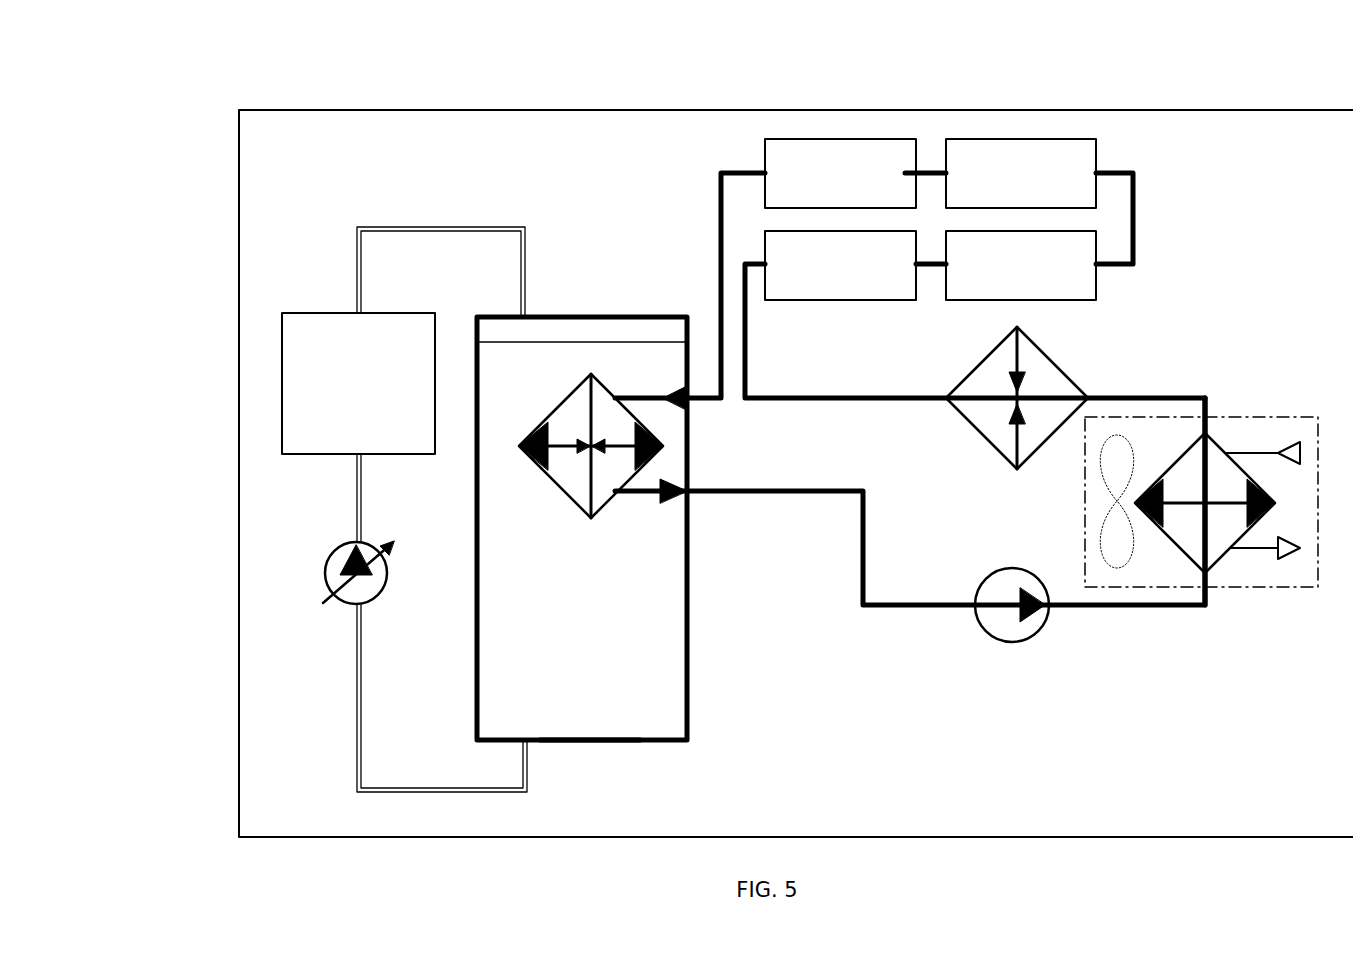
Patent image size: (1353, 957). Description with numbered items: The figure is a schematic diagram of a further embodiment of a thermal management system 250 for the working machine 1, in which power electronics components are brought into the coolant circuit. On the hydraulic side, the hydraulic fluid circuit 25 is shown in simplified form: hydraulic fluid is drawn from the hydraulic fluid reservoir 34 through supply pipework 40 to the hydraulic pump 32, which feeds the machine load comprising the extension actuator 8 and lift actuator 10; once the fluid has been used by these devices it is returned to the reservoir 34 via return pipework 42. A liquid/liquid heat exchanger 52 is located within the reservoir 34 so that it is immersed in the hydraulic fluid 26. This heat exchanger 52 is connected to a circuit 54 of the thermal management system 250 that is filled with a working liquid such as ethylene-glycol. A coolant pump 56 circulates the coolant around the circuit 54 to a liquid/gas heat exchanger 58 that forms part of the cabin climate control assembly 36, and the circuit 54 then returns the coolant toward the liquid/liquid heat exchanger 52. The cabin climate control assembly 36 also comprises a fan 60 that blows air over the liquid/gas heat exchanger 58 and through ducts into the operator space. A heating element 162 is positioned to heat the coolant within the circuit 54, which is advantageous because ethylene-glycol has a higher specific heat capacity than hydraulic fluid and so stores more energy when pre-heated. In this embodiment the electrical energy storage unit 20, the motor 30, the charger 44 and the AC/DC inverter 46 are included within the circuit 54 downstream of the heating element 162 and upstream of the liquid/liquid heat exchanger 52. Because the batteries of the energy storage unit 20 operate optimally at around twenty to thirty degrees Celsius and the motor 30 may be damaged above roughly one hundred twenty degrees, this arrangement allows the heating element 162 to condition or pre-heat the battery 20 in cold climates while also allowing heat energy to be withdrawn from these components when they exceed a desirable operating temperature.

The working machine 1 is at (309, 108).
The extension actuator 8 is at (257, 383).
The lift actuator 10 is at (282, 388).
The electrical energy storage unit 20 is at (830, 138).
The hydraulic fluid circuit 25 is at (441, 826).
The hydraulic fluid 26 is at (667, 695).
The motor 30 is at (1060, 138).
The hydraulic pump 32 is at (345, 607).
The hydraulic fluid reservoir 34 is at (593, 742).
The cabin climate control assembly 36 is at (1257, 417).
The supply pipework 40 is at (352, 768).
The return pipework 42 is at (412, 227).
The charger 44 is at (1093, 252).
The AC/DC inverter 46 is at (762, 250).
The liquid/liquid heat exchanger 52 is at (606, 392).
The circuit 54 is at (880, 612).
The coolant pump 56 is at (1010, 642).
The liquid/gas heat exchanger 58 is at (1228, 560).
The fan 60 is at (1124, 568).
The heating element 162 is at (1060, 366).
The thermal management system 250 is at (965, 127).